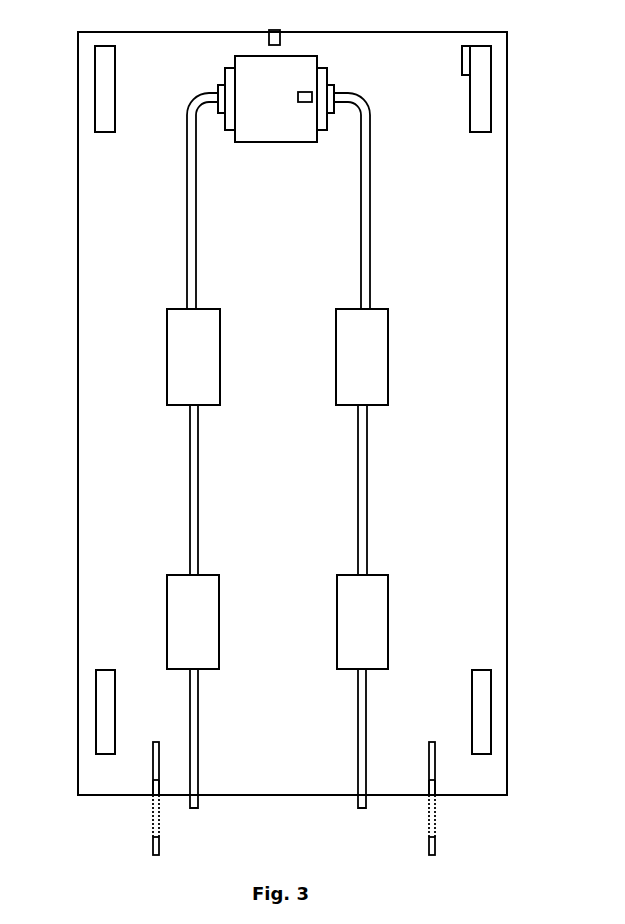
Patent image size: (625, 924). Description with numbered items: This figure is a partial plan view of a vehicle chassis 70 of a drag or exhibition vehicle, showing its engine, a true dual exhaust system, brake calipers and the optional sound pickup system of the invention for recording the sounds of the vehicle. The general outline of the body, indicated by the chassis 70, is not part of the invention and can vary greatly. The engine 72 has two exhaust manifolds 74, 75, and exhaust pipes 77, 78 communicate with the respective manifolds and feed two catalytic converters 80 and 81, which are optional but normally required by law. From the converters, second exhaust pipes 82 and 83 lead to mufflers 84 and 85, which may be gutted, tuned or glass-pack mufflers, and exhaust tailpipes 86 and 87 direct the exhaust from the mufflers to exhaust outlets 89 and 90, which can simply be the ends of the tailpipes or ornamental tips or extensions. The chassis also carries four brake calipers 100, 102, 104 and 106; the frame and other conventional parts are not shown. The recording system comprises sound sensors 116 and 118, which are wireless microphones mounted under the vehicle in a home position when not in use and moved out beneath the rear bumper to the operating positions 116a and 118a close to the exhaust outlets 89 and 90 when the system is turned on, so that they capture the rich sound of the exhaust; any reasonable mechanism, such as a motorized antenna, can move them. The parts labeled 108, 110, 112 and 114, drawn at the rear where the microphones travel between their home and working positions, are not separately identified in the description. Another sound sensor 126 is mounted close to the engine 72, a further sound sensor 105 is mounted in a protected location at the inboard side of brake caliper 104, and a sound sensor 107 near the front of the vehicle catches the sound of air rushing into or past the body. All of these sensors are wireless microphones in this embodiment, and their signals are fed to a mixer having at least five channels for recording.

The vehicle chassis 70 is at (78, 392).
The engine 72 is at (259, 108).
The exhaust manifold 74 is at (230, 68).
The exhaust manifold 75 is at (323, 68).
The exhaust pipe 77 is at (187, 200).
The right conduit 78 is at (370, 200).
The catalytic converter 80 is at (182, 361).
The catalytic converter 81 is at (351, 361).
The second exhaust pipe 82 is at (190, 503).
The second exhaust pipe 83 is at (367, 503).
The muffler 84 is at (182, 625).
The muffler 85 is at (351, 625).
The exhaust tailpipe 86 is at (198, 728).
The exhaust tailpipe 87 is at (366, 728).
The exhaust outlet 89 is at (198, 805).
The exhaust outlet 90 is at (366, 805).
The brake caliper 100 is at (110, 711).
The brake caliper 102 is at (115, 53).
The brake caliper 104 is at (482, 98).
The sound sensor 105 is at (462, 53).
The brake caliper 106 is at (482, 711).
The sound sensor 107 is at (275, 30).
The left support rod 108 is at (153, 766).
The right support rod 110 is at (435, 766).
The left rod extension 112 is at (153, 820).
The right rod extension 114 is at (435, 820).
The sound sensor 116 is at (153, 786).
The operating position of sound sensor 116a is at (153, 847).
The sound sensor 118 is at (435, 786).
The operating position of sound sensor 118a is at (435, 847).
The sound sensor 126 is at (305, 92).